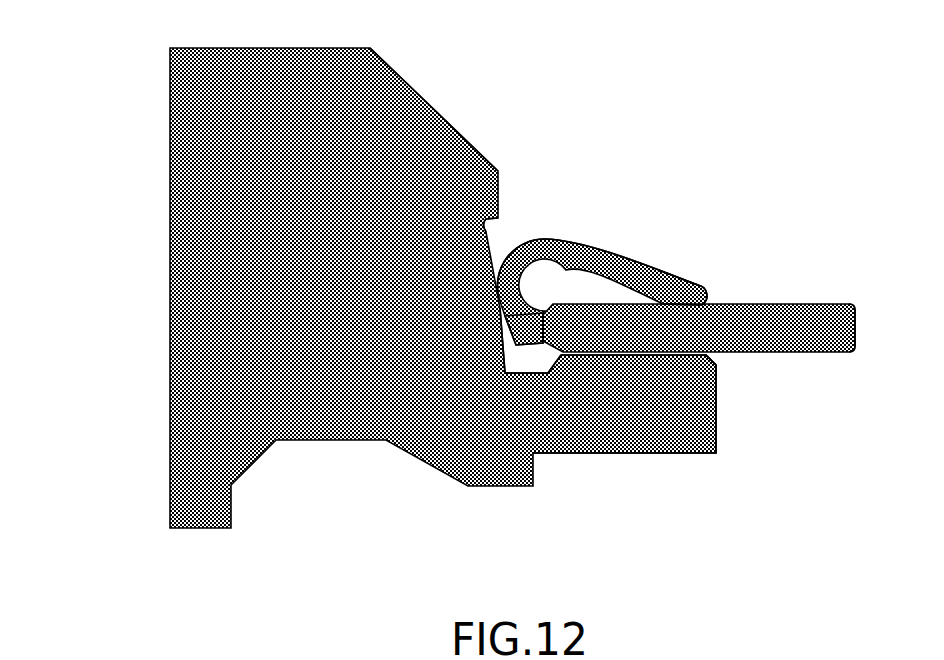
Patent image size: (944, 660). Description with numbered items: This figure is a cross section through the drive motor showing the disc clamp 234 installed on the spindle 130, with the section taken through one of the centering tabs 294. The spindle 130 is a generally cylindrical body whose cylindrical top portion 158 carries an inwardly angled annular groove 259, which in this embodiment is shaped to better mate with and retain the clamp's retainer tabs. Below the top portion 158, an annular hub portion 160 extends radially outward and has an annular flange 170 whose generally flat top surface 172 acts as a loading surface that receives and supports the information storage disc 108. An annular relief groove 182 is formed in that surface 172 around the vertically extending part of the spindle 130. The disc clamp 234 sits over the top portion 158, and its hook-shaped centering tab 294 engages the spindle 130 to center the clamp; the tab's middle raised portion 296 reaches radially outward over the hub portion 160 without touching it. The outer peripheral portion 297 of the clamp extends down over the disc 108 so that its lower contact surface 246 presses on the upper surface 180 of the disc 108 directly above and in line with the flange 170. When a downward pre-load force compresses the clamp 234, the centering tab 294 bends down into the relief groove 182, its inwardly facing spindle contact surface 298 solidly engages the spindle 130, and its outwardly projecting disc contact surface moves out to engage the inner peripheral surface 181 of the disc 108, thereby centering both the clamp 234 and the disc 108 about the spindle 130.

The spindle 130 is at (474, 324).
The cylindrical top portion 158 is at (390, 107).
The annular hub portion 160 is at (152, 530).
The annular groove 259 is at (493, 214).
The centering tab 294 is at (562, 231).
The middle raised portion 296 is at (597, 257).
The disc clamp 234 is at (663, 268).
The outer peripheral portion 297 is at (700, 274).
The lower contact surface 246 is at (693, 297).
The upper surface 180 is at (807, 295).
The information storage disc 108 is at (840, 322).
The top surface 172 is at (718, 346).
The spindle contact surface 298 is at (491, 273).
The inner peripheral surface 181 is at (512, 316).
The annular relief groove 182 is at (515, 360).
The annular flange 170 is at (675, 426).